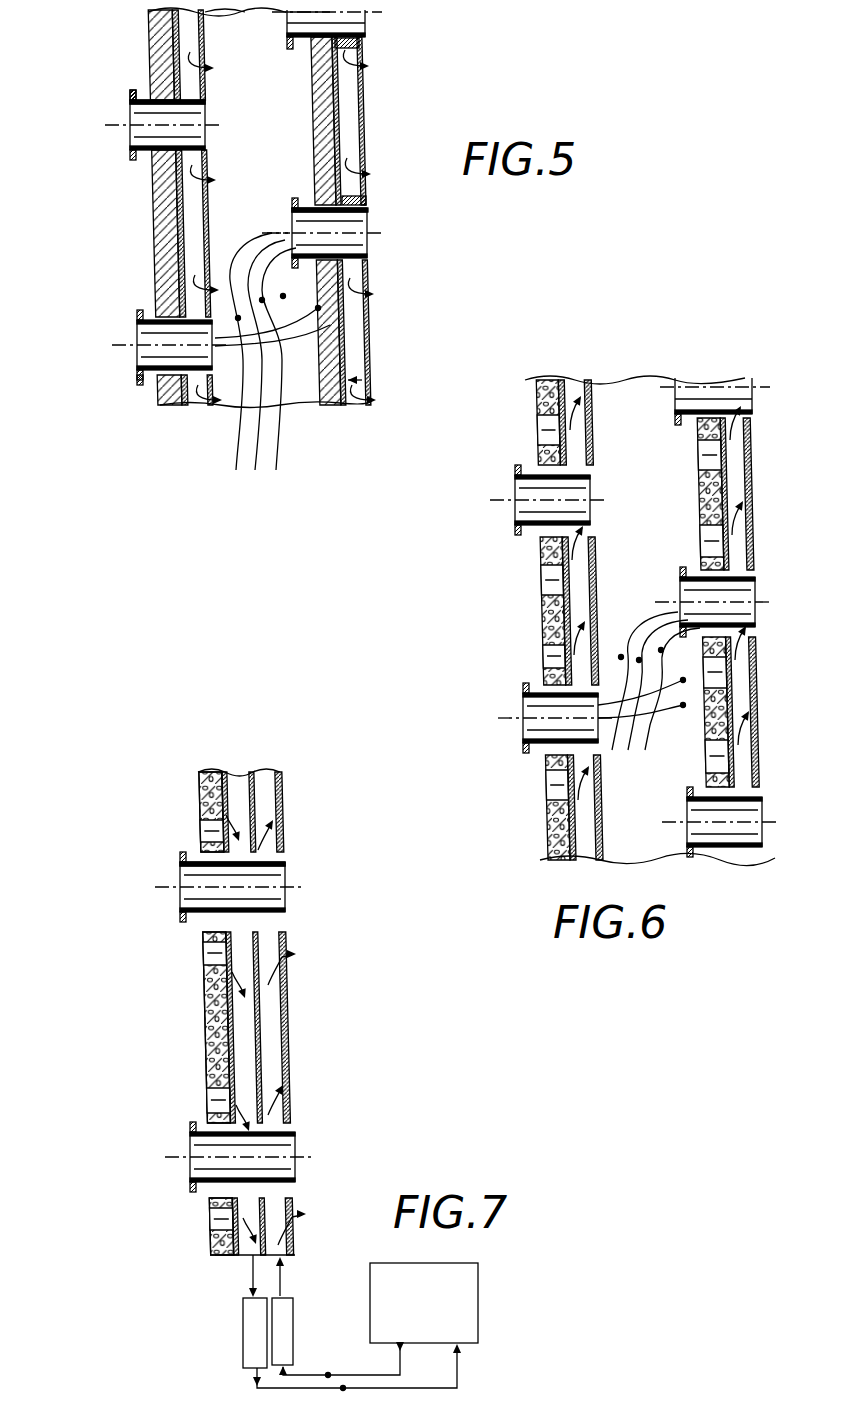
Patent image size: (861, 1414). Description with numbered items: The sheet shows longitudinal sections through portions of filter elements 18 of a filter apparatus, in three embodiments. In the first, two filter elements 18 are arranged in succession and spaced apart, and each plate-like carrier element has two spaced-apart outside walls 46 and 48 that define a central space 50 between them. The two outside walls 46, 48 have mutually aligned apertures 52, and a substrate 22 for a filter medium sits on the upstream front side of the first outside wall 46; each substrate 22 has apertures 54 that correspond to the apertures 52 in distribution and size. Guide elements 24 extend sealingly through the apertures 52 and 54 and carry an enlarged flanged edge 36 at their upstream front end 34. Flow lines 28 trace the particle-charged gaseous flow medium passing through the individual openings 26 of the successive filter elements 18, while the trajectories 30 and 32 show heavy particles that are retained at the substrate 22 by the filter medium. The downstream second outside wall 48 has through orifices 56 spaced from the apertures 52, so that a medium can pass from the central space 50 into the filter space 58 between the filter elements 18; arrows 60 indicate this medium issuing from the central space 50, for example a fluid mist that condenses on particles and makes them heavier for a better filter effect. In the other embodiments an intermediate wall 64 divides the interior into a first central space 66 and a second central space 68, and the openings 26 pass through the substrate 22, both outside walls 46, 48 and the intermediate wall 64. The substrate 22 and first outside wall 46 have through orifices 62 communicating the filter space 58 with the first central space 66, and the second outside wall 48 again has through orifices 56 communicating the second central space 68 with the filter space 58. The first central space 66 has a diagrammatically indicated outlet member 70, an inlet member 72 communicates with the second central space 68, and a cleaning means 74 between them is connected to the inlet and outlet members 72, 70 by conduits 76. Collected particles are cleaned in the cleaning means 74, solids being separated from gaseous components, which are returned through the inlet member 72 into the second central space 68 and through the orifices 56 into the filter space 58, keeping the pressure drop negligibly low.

In FIG. 5, the filter element 18 is at (382, 87).
In FIG. 6, the filter element 18 is at (768, 535).
In FIG. 7, the filter element 18 is at (300, 960).
In FIG. 5, the substrate 22 is at (158, 48).
In FIG. 6, the substrate 22 is at (712, 495).
In FIG. 7, the substrate 22 is at (203, 1000).
In FIG. 5, the guide element 24 is at (135, 143).
In FIG. 5, the opening 26 is at (352, 240).
In FIG. 6, the opening 26 is at (683, 393).
In FIG. 7, the opening 26 is at (198, 895).
In FIG. 5, the flow lines 28 is at (283, 296).
In FIG. 6, the flow lines 28 is at (661, 650).
In FIG. 5, the trajectory of heavy particles 30 is at (310, 330).
In FIG. 6, the trajectory of heavy particles 30 is at (685, 705).
In FIG. 5, the trajectory of heavy particles 32 is at (320, 308).
In FIG. 6, the trajectory of heavy particles 32 is at (685, 680).
In FIG. 5, the front end 34 is at (130, 112).
In FIG. 7, the front end 34 is at (180, 870).
In FIG. 5, the flanged edge 36 is at (130, 95).
In FIG. 5, the first outside wall 46 is at (337, 115).
In FIG. 6, the first outside wall 46 is at (556, 832).
In FIG. 7, the first outside wall 46 is at (212, 1022).
In FIG. 5, the second outside wall 48 is at (363, 148).
In FIG. 6, the second outside wall 48 is at (754, 455).
In FIG. 7, the second outside wall 48 is at (285, 1022).
In FIG. 5, the central space 50 is at (370, 338).
In FIG. 6, the central space 50 is at (757, 772).
In FIG. 5, the aperture 52 is at (318, 58).
In FIG. 5, the aperture 54 is at (273, 202).
In FIG. 5, the through orifice 56 is at (210, 66).
In FIG. 7, the through orifice 56 is at (297, 954).
In FIG. 5, the filter space 58 is at (268, 138).
In FIG. 7, the filter space 58 is at (350, 884).
In FIG. 5, the arrow 60 is at (358, 172).
In FIG. 6, the through orifice 62 is at (549, 432).
In FIG. 7, the through orifice 62 is at (207, 825).
In FIG. 7, the intermediate wall 64 is at (257, 1065).
In FIG. 7, the first central space 66 is at (212, 1078).
In FIG. 7, the second central space 68 is at (270, 1000).
In FIG. 7, the outlet member 70 is at (248, 1335).
In FIG. 7, the inlet member 72 is at (285, 1312).
In FIG. 7, the cleaning means 74 is at (435, 1308).
In FIG. 7, the conduit 76 is at (343, 1388).